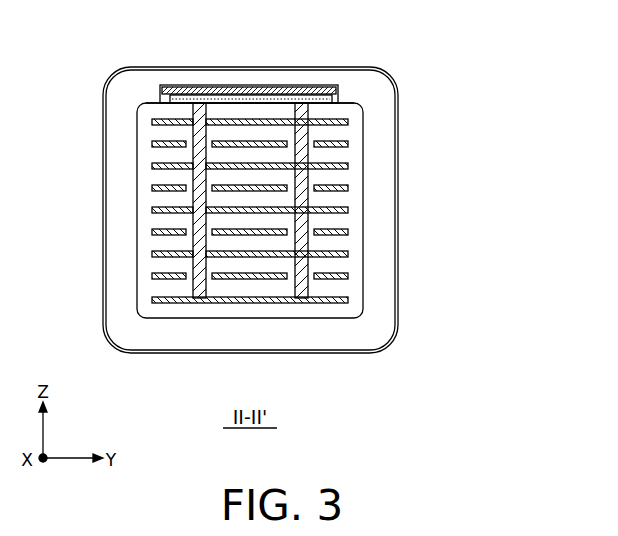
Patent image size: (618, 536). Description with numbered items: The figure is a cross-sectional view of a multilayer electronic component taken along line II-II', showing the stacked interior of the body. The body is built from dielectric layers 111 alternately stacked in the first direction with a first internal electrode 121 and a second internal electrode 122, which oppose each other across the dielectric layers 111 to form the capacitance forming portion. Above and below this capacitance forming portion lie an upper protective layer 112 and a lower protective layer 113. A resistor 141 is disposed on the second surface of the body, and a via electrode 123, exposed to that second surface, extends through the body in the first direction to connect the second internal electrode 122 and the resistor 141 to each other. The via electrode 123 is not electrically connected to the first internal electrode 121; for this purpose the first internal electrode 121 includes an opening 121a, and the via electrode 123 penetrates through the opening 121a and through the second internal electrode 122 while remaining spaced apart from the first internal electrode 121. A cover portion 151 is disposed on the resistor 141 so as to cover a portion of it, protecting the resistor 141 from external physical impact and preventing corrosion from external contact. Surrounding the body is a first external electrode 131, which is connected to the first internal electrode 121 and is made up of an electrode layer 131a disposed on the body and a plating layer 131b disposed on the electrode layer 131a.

The dielectric layer 111 is at (340, 222).
The upper protective layer 112 is at (154, 107).
The lower protective layer 113 is at (347, 312).
The first internal electrode 121 is at (347, 233).
The opening 121a is at (310, 278).
The second internal electrode 122 is at (348, 210).
The via electrode 123 is at (296, 182).
The first external electrode 131 is at (327, 209).
The electrode layer 131a is at (376, 93).
The plating layer 131b is at (398, 110).
The resistor 141 is at (208, 96).
The cover portion 151 is at (270, 88).